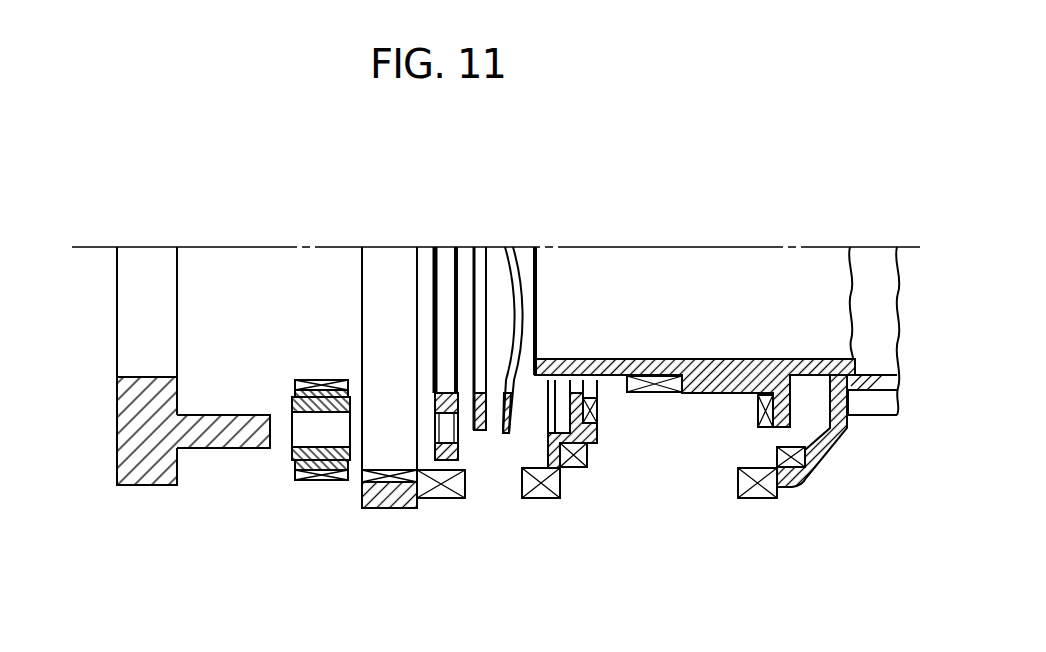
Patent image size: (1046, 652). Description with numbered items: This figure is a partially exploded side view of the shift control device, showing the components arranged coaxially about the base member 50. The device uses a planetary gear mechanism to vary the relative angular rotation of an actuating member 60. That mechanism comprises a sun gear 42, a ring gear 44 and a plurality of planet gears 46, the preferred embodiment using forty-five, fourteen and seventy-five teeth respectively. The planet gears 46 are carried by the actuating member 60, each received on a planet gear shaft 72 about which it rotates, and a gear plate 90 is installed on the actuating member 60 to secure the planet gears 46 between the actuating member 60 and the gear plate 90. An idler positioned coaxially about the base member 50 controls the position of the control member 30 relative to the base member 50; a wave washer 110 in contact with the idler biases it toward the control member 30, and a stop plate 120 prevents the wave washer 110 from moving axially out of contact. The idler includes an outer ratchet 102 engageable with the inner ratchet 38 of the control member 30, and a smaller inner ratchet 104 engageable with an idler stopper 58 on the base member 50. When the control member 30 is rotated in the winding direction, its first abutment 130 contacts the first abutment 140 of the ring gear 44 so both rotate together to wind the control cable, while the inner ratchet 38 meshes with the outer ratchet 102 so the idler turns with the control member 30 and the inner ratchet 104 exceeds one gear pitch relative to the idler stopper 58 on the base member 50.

The control member 30 is at (829, 439).
The inner ratchet 38 is at (777, 452).
The sun gear 42 is at (655, 378).
The ring gear 44 is at (382, 262).
The planet gear 46 is at (293, 398).
The base member 50 is at (726, 372).
The idler stopper 58 is at (758, 412).
The actuating member 60 is at (137, 331).
The planet gear shaft 72 is at (215, 442).
The gear plate 90 is at (442, 270).
The outer ratchet 102 is at (571, 460).
The inner ratchet 104 is at (598, 413).
The wave washer 110 is at (508, 262).
The stop plate 120 is at (480, 266).
The first abutment 130 is at (760, 492).
The first abutment 140 is at (437, 498).